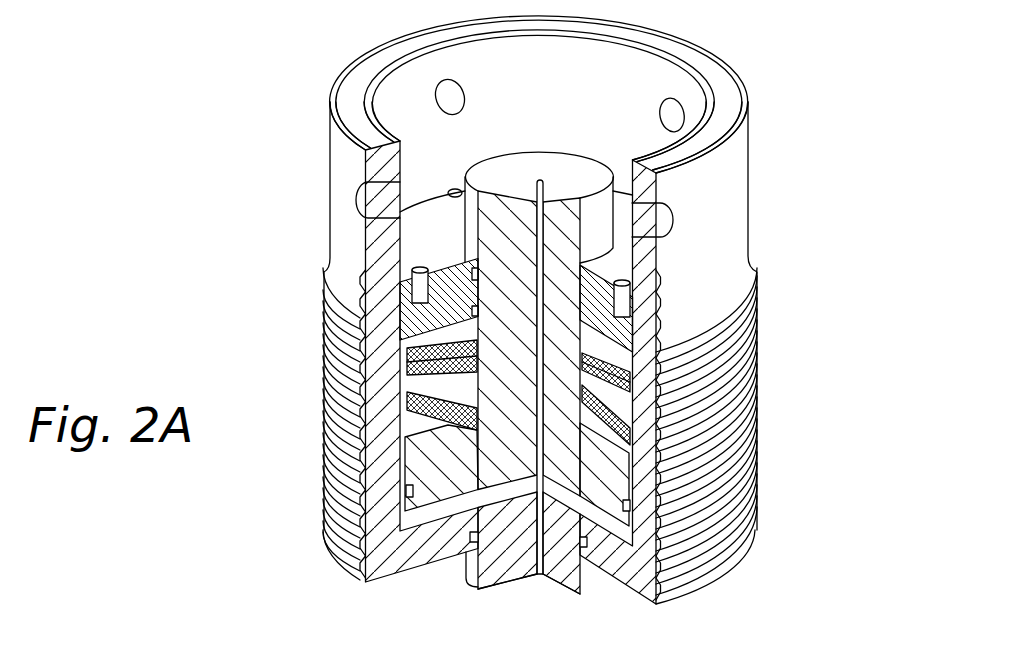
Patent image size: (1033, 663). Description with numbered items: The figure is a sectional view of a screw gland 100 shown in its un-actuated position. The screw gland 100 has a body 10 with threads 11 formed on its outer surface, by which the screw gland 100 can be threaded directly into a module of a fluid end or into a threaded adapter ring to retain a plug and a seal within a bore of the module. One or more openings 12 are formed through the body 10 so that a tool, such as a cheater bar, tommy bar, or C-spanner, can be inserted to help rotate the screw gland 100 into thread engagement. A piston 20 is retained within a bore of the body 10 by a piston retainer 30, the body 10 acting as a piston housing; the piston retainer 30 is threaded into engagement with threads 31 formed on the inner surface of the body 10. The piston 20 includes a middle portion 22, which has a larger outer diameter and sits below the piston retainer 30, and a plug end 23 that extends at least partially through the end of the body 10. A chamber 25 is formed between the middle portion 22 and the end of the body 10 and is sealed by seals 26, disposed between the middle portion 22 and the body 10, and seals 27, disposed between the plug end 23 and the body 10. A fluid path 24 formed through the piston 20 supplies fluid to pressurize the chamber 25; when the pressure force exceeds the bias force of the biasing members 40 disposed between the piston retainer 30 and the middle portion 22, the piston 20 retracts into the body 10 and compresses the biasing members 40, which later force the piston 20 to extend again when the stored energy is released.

The screw gland 100 is at (276, 40).
The body 10 is at (750, 178).
The threads 11 is at (758, 357).
The openings 12 is at (459, 88).
The piston 20 is at (572, 160).
The middle portion 22 is at (418, 452).
The plug end 23 is at (509, 574).
The fluid path 24 is at (538, 246).
The chamber 25 is at (616, 526).
The seals 26 is at (410, 492).
The seals 27 is at (470, 543).
The piston retainer 30 is at (433, 200).
The threads 31 is at (406, 290).
The biasing members 40 is at (418, 392).